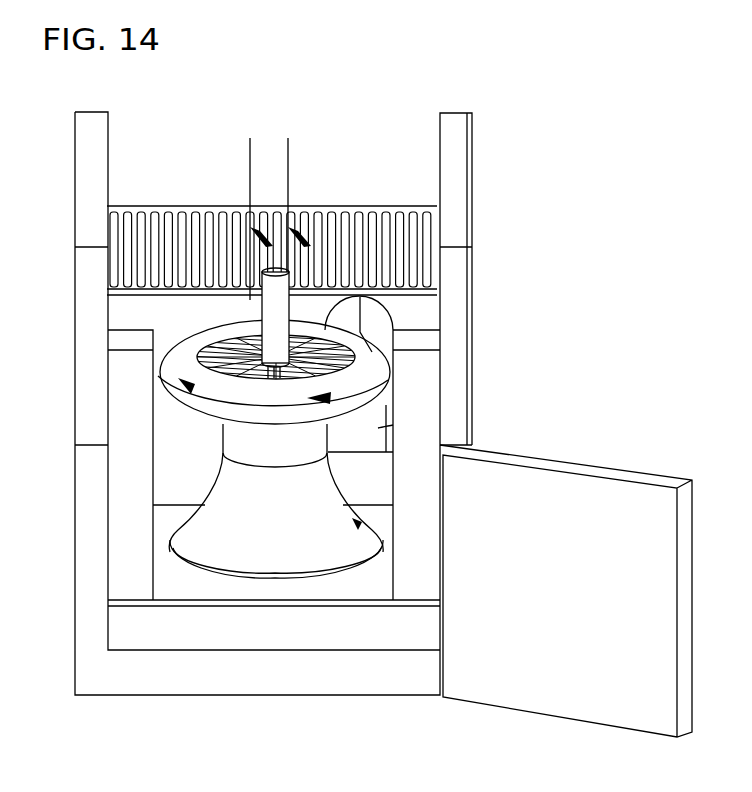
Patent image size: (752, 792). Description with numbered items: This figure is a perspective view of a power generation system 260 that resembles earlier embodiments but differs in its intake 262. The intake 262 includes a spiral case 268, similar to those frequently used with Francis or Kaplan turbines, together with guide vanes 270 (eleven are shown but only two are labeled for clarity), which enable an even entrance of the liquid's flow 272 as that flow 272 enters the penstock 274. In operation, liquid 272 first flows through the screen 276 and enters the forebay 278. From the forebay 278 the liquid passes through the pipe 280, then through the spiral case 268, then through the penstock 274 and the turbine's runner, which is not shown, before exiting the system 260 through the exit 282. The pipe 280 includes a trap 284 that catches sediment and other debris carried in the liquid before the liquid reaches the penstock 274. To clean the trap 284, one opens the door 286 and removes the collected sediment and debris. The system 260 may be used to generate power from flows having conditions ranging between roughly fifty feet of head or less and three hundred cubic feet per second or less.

The power generation system 260 is at (192, 110).
The intake 262 is at (361, 160).
The spiral case 268 is at (160, 378).
The guide vanes 270 is at (210, 352).
The liquid's flow 272 is at (250, 158).
The penstock 274 is at (224, 432).
The screen 276 is at (408, 206).
The forebay 278 is at (197, 184).
The pipe 280 is at (375, 316).
The exit 282 is at (306, 558).
The trap 284 is at (358, 453).
The door 286 is at (393, 425).